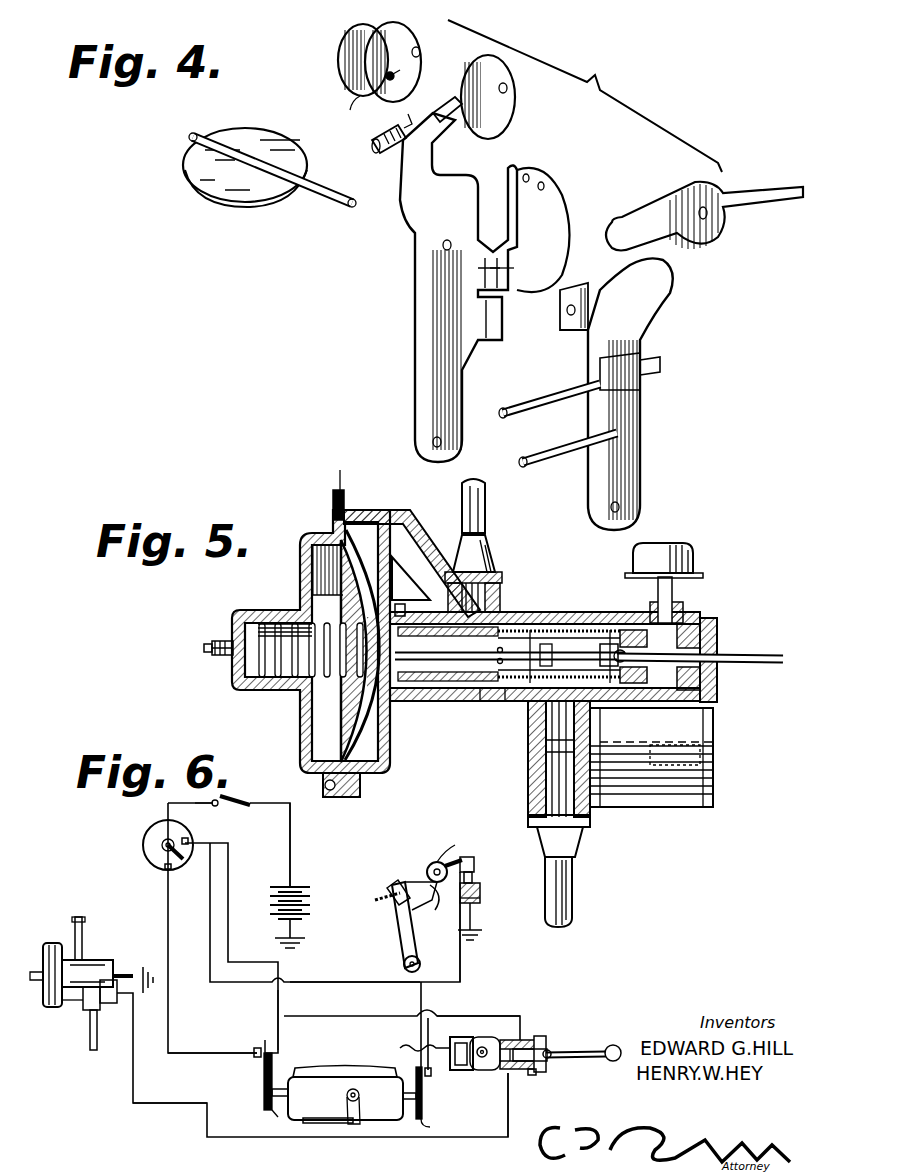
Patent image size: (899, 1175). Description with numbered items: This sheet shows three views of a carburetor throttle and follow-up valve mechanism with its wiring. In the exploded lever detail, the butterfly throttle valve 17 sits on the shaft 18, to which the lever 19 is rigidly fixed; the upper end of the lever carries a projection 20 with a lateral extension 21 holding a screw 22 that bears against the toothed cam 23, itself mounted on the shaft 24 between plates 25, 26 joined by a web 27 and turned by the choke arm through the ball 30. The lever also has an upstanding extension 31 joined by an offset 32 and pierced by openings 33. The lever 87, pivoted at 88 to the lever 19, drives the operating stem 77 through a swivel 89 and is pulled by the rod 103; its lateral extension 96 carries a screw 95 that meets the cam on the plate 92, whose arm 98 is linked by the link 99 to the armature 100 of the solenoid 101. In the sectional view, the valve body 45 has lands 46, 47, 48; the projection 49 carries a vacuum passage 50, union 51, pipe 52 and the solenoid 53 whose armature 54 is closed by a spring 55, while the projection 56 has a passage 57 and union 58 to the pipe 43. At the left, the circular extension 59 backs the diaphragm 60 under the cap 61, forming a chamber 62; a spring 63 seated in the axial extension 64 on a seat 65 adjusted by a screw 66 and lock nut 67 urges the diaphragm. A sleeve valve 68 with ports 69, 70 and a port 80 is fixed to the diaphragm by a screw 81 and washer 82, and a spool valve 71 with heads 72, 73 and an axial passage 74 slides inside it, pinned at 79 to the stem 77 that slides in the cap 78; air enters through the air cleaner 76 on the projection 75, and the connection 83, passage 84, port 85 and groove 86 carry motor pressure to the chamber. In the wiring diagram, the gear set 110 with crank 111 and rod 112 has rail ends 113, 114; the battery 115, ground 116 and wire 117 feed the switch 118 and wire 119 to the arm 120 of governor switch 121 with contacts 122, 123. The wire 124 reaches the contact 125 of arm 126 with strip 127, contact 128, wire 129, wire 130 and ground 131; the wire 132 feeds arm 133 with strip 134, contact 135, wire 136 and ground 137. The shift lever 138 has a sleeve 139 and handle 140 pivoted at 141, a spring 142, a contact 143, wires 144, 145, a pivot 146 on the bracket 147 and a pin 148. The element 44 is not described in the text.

In FIG. 4, the butterfly throttle valve 17 is at (268, 132).
In FIG. 4, the throttle shaft 18 is at (313, 192).
In FIG. 4, the lever 19 is at (413, 295).
In FIG. 6, the lever 19 is at (418, 935).
In FIG. 6, the projection 20 is at (395, 882).
In FIG. 4, the lateral extension 21 is at (420, 118).
In FIG. 4, the screw 22 is at (372, 145).
In FIG. 4, the toothed cam 23 is at (460, 132).
In FIG. 6, the toothed cam 23 is at (432, 863).
In FIG. 4, the shaft 24 is at (398, 145).
In FIG. 6, the shaft 24 is at (461, 848).
In FIG. 4, the plate 25 is at (420, 48).
In FIG. 4, the plate 26 is at (348, 42).
In FIG. 4, the web or transverse member 27 is at (344, 108).
In FIG. 4, the ball 30 is at (390, 82).
In FIG. 4, the upstanding extension 31 is at (548, 228).
In FIG. 6, the upstanding extension 31 is at (445, 902).
In FIG. 4, the integral offset 32 is at (515, 257).
In FIG. 4, the openings 33 is at (545, 183).
In FIG. 5, the pipe 43 is at (485, 520).
In FIG. 6, the pipe 43 is at (75, 919).
In FIG. 5, the cylinder 44 is at (550, 612).
In FIG. 6, the cylinder 44 is at (88, 960).
In FIG. 5, the valve body 45 is at (462, 702).
In FIG. 6, the valve body 45 is at (100, 966).
In FIG. 5, the land 46 is at (612, 630).
In FIG. 5, the land 47 is at (506, 702).
In FIG. 5, the land 48 is at (425, 702).
In FIG. 5, the integral projection 49 is at (530, 728).
In FIG. 6, the integral projection 49 is at (84, 1000).
In FIG. 5, the vacuum passage 50 is at (548, 778).
In FIG. 5, the union 51 is at (540, 805).
In FIG. 6, the union 51 is at (55, 1005).
In FIG. 5, the pipe 52 is at (566, 905).
In FIG. 6, the pipe 52 is at (90, 1040).
In FIG. 5, the solenoid 53 is at (628, 808).
In FIG. 6, the solenoid 53 is at (108, 1004).
In FIG. 5, the armature 54 is at (590, 748).
In FIG. 5, the light spring 55 is at (678, 745).
In FIG. 5, the projection 56 is at (502, 595).
In FIG. 5, the passage 57 is at (500, 605).
In FIG. 5, the union 58 is at (490, 565).
In FIG. 5, the circular extension 59 is at (364, 788).
In FIG. 5, the diaphragm 60 is at (345, 800).
In FIG. 5, the circular cap 61 is at (301, 720).
In FIG. 5, the chamber 62 is at (313, 560).
In FIG. 5, the light compression spring 63 is at (328, 677).
In FIG. 5, the axial extension 64 is at (262, 609).
In FIG. 6, the axial extension 64 is at (43, 968).
In FIG. 5, the spring seat 65 is at (240, 672).
In FIG. 5, the screw 66 is at (208, 652).
In FIG. 5, the lock nut 67 is at (218, 641).
In FIG. 5, the sleeve valve 68 is at (570, 630).
In FIG. 5, the radial ports 69 is at (482, 702).
In FIG. 5, the radial ports 70 is at (597, 630).
In FIG. 5, the spool valve 71 is at (535, 630).
In FIG. 5, the head 72 is at (640, 628).
In FIG. 5, the head 73 is at (497, 655).
In FIG. 5, the axial passage 74 is at (635, 630).
In FIG. 5, the radial projection 75 is at (683, 608).
In FIG. 5, the air cleaner 76 is at (693, 565).
In FIG. 4, the operating stem 77 is at (553, 400).
In FIG. 5, the operating stem 77 is at (752, 655).
In FIG. 5, the cap 78 is at (717, 640).
In FIG. 5, the pin 79 is at (610, 657).
In FIG. 5, the port 80 is at (408, 601).
In FIG. 5, the screw 81 is at (360, 677).
In FIG. 5, the metal washer 82 is at (365, 635).
In FIG. 5, the integral connection 83 is at (403, 516).
In FIG. 5, the passage 84 is at (420, 545).
In FIG. 5, the port 85 is at (347, 481).
In FIG. 5, the groove 86 is at (333, 518).
In FIG. 4, the lever 87 is at (641, 410).
In FIG. 6, the lever 87 is at (400, 935).
In FIG. 6, the pivot 88 is at (420, 960).
In FIG. 4, the swivel 89 is at (632, 358).
In FIG. 6, the plate 92 is at (453, 842).
In FIG. 6, the screw 95 is at (375, 902).
In FIG. 4, the lateral extension 96 is at (568, 290).
In FIG. 6, the radially extending arm 98 is at (473, 858).
In FIG. 6, the link 99 is at (474, 872).
In FIG. 6, the armature 100 is at (480, 886).
In FIG. 6, the solenoid 101 is at (480, 898).
In FIG. 4, the rod 103 is at (565, 450).
In FIG. 6, the gear set 110 is at (325, 1067).
In FIG. 6, the crank 111 is at (347, 1095).
In FIG. 6, the rod 112 is at (322, 1124).
In FIG. 6, the shift rail end 113 is at (403, 1097).
In FIG. 6, the shift rail end 114 is at (272, 1108).
In FIG. 6, the battery 115 is at (310, 896).
In FIG. 6, the ground 116 is at (304, 950).
In FIG. 6, the wire 117 is at (290, 855).
In FIG. 6, the main control switch 118 is at (238, 796).
In FIG. 6, the wire 119 is at (190, 801).
In FIG. 6, the contact arm 120 is at (185, 868).
In FIG. 6, the governor switch 121 is at (143, 845).
In FIG. 6, the contact 122 is at (163, 870).
In FIG. 6, the second contact 123 is at (190, 838).
In FIG. 6, the wire 124 is at (277, 999).
In FIG. 6, the stationary contact 125 is at (265, 1040).
In FIG. 6, the switch arm 126 is at (264, 1080).
In FIG. 6, the insulated strip 127 is at (278, 1087).
In FIG. 6, the contact 128 is at (254, 1055).
In FIG. 6, the wire 129 is at (202, 1053).
In FIG. 6, the wire 130 is at (170, 1089).
In FIG. 6, the ground 131 is at (146, 975).
In FIG. 6, the wire 132 is at (355, 982).
In FIG. 6, the switch arm 133 is at (425, 1100).
In FIG. 6, the insulating strip 134 is at (446, 1123).
In FIG. 6, the contact 135 is at (431, 1078).
In FIG. 6, the wire 136 is at (462, 985).
In FIG. 6, the ground 137 is at (482, 935).
In FIG. 6, the gear shift lever 138 is at (540, 1040).
In FIG. 6, the inner sleeve element 139 is at (560, 1068).
In FIG. 6, the outer handle element 140 is at (598, 1050).
In FIG. 6, the pivot 141 is at (552, 1052).
In FIG. 6, the spring 142 is at (535, 1077).
In FIG. 6, the contact 143 is at (540, 1036).
In FIG. 6, the wire 144 is at (505, 1105).
In FIG. 6, the wire 145 is at (500, 1016).
In FIG. 6, the pivot 146 is at (462, 1042).
In FIG. 6, the steering column bracket 147 is at (417, 1043).
In FIG. 6, the pin 148 is at (486, 1046).